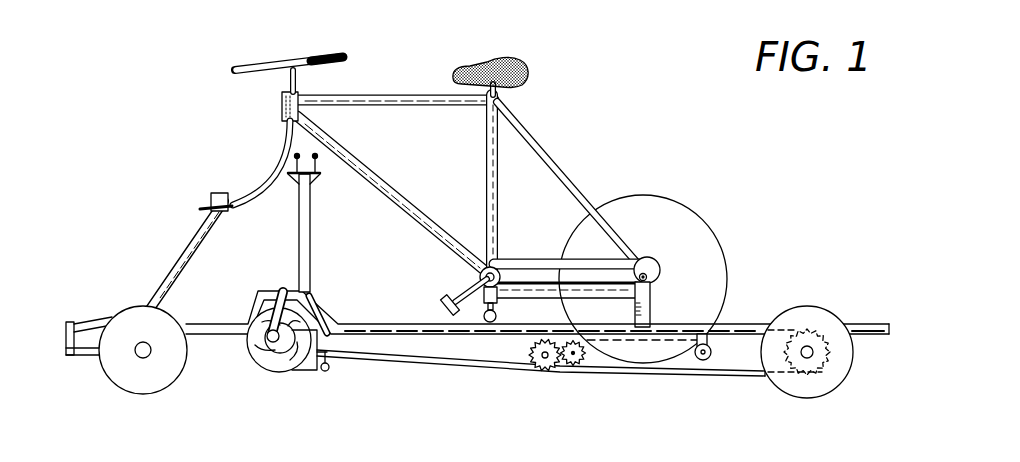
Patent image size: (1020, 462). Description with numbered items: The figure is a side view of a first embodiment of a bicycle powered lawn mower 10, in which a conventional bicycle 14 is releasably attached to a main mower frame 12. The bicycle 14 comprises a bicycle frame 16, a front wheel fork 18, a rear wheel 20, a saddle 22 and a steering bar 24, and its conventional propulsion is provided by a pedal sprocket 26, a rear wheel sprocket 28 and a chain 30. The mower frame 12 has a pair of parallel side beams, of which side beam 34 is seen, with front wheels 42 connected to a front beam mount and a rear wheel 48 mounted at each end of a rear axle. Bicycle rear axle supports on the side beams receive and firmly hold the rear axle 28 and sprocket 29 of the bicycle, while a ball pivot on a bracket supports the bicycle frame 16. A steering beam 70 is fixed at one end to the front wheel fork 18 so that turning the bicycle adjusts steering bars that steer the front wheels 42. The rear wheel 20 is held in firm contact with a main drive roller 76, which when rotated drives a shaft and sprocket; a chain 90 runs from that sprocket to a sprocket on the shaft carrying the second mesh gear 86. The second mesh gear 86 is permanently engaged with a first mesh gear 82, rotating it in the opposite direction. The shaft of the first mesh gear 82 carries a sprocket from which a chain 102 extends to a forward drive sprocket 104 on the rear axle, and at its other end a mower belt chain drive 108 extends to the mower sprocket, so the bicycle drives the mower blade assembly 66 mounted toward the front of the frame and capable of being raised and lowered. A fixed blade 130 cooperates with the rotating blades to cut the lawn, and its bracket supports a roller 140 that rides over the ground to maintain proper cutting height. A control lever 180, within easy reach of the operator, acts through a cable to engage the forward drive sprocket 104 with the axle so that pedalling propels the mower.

The bicycle powered lawn mower 10 is at (160, 172).
The main mower frame 12 is at (850, 289).
The bicycle 14 is at (582, 120).
The bicycle frame 16 is at (402, 96).
The front wheel fork 18 is at (253, 178).
The rear wheel 20 is at (707, 223).
The saddle 22 is at (487, 62).
The steering bar 24 is at (245, 64).
The pedal sprocket 26 is at (464, 243).
The rear wheel sprocket 28 is at (650, 258).
The sprocket 29 is at (652, 278).
The chain 30 is at (528, 258).
The side beam 34 is at (383, 323).
The front wheel 42 is at (130, 394).
The rear wheel 48 is at (808, 398).
The mower blade assembly 66 is at (247, 354).
The steering beam 70 is at (173, 260).
The main drive roller 76 is at (712, 355).
The first mesh gear 82 is at (530, 373).
The second mesh gear 86 is at (572, 366).
The chain 90 is at (678, 363).
The chain 102 is at (698, 372).
The forward drive sprocket 104 is at (807, 329).
The mower belt chain drive 108 is at (417, 363).
The fixed blade 130 is at (302, 371).
The roller 140 is at (329, 370).
The control lever 180 is at (312, 235).